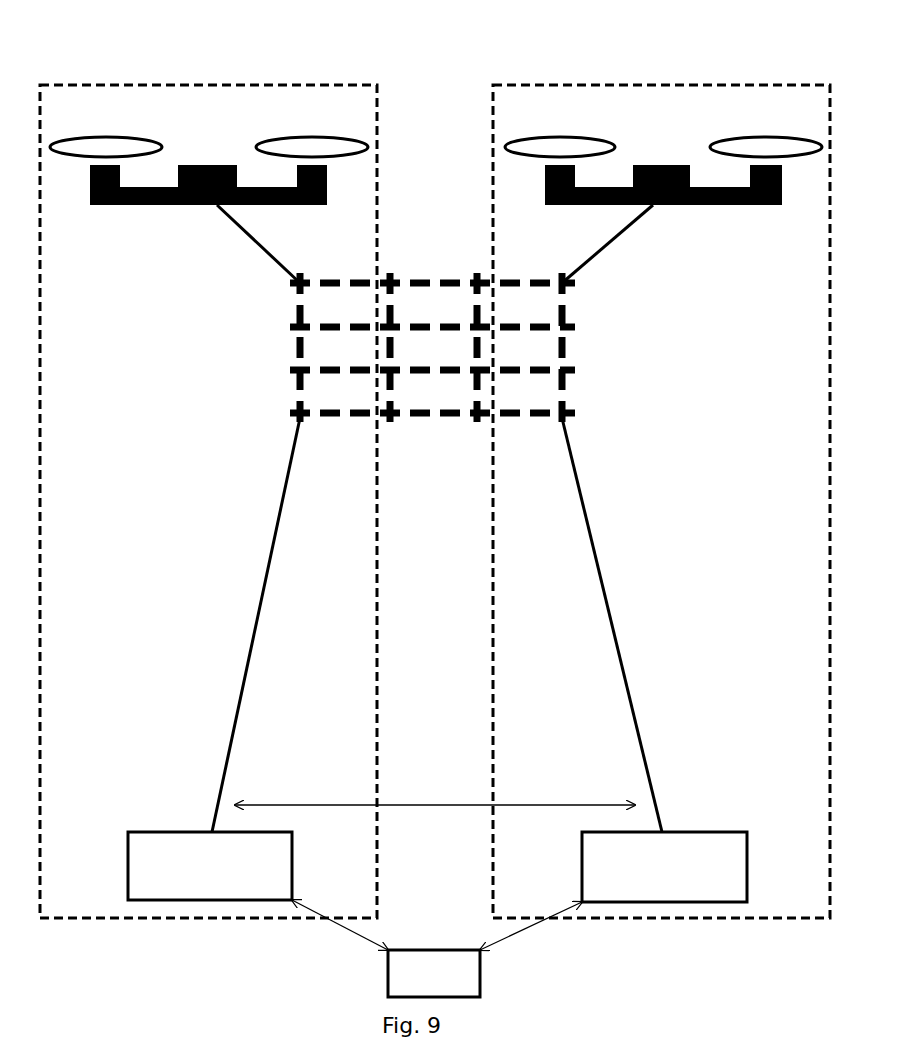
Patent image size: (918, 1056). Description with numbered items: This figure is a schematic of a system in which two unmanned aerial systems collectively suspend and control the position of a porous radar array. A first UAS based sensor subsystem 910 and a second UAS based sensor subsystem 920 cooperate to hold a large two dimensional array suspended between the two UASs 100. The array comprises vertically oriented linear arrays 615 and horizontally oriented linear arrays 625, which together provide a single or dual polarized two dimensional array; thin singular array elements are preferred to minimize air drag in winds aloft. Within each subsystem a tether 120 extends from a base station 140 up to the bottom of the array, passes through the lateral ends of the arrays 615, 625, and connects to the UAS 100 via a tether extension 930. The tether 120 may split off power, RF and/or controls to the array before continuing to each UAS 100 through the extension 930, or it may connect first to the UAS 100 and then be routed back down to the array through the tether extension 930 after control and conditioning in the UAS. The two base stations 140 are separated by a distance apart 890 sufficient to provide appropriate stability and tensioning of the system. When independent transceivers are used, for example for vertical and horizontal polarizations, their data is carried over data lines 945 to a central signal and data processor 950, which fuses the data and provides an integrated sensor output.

The first UAS based sensor subsystem 910 is at (137, 82).
The second UAS based sensor subsystem 920 is at (742, 82).
The UAS 100 is at (436, 153).
The tether extension 930 is at (427, 244).
The horizontally oriented linear array 625 is at (250, 270).
The vertically oriented linear array 615 is at (588, 445).
The tether 120 is at (425, 625).
The base station 140 is at (437, 867).
The distance apart 890 is at (435, 823).
The data lines 945 is at (437, 933).
The central signal and data processor 950 is at (434, 973).